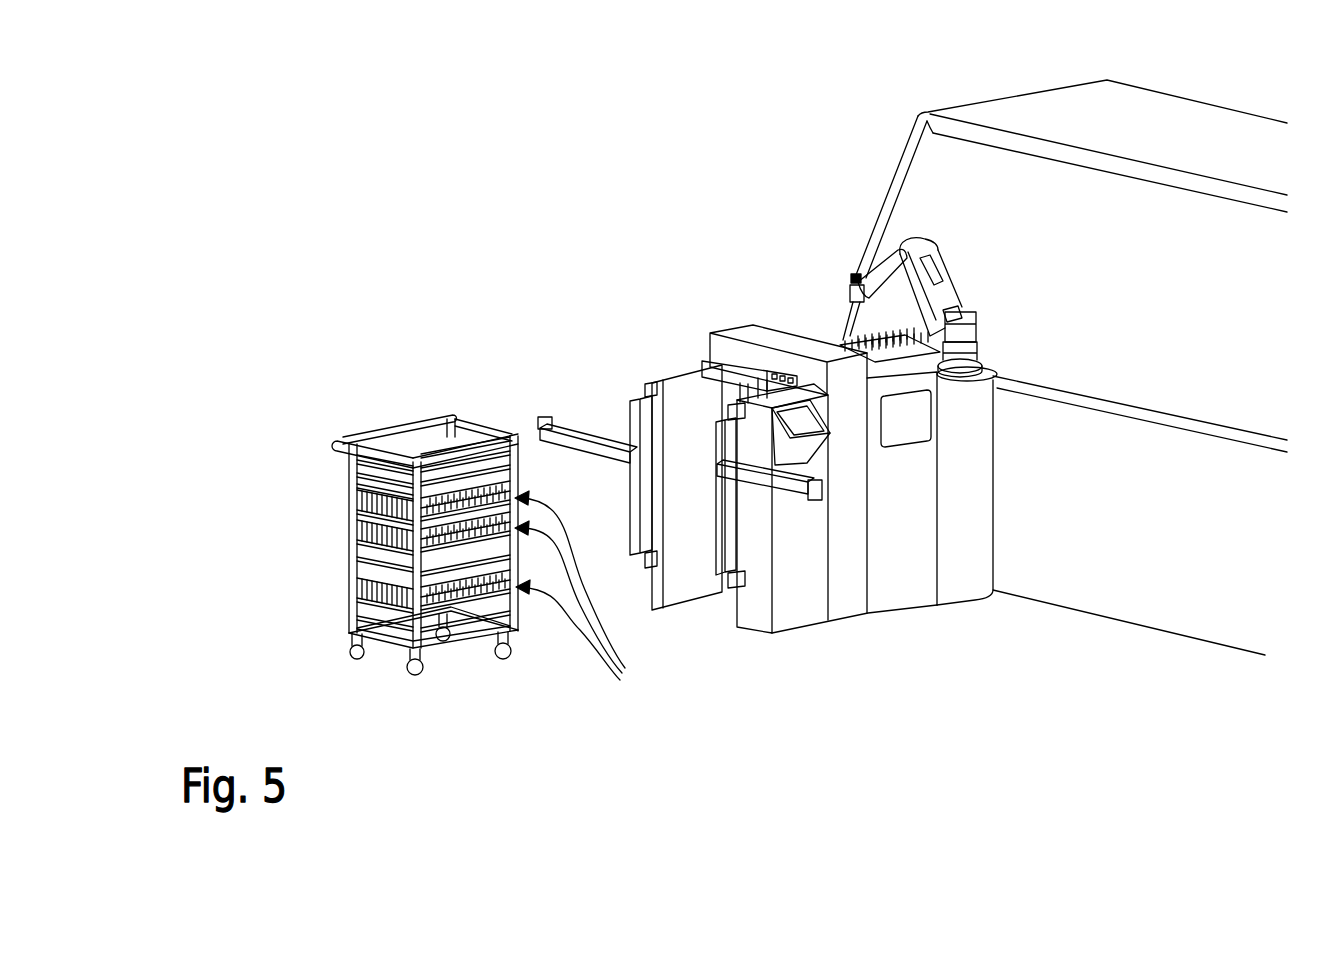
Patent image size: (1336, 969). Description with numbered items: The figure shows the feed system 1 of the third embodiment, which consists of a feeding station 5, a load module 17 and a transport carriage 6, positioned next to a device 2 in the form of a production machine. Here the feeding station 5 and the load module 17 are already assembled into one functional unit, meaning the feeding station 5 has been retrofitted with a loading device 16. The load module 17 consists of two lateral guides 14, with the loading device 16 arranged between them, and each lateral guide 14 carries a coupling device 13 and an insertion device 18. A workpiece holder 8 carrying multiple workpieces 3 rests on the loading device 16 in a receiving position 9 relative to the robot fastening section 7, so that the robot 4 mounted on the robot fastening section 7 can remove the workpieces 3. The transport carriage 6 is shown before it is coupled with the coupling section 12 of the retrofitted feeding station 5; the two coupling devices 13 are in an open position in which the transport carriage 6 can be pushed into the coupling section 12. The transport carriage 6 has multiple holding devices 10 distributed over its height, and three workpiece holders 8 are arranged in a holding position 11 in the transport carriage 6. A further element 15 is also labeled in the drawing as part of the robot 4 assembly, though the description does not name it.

The feed system 1 is at (450, 282).
The device 2 is at (1220, 294).
The workpieces 3 is at (857, 305).
The robot 4 is at (916, 253).
The feeding station 5 is at (910, 538).
The transport carriage 6 is at (348, 614).
The robot fastening section 7 is at (976, 378).
The workpiece holder 8 is at (841, 341).
The receiving position 9 is at (901, 382).
The holding devices 10 is at (357, 460).
The holding position 11 is at (583, 593).
The coupling section 12 is at (672, 582).
The coupling devices 13 is at (640, 399).
The lateral guides 14 is at (700, 391).
The robot arm 15 is at (881, 269).
The loading device 16 is at (733, 372).
The load module 17 is at (830, 478).
The insertion device 18 is at (540, 417).